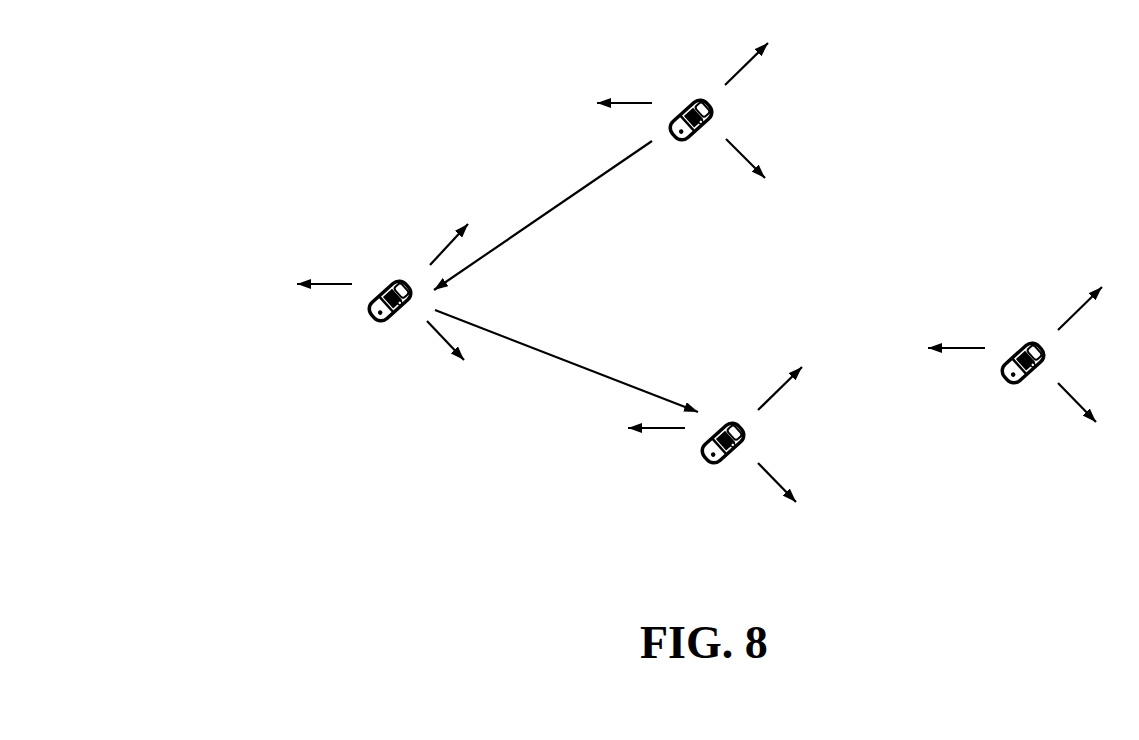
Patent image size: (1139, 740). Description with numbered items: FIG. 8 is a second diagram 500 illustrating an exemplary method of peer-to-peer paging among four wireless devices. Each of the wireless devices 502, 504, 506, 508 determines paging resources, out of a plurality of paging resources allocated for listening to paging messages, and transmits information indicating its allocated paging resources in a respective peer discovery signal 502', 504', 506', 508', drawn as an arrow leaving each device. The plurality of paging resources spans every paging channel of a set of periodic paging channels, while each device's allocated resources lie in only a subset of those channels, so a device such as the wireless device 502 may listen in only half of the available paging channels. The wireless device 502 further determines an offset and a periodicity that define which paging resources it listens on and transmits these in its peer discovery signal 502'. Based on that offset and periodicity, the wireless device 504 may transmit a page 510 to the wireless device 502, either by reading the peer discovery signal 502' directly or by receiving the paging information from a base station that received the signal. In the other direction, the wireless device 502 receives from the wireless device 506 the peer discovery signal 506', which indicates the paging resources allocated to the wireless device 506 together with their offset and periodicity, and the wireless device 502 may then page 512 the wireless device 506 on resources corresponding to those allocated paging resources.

The second diagram 500 is at (236, 60).
The wireless device 502 is at (417, 292).
The peer discovery signal 502' is at (324, 267).
The wireless device 504 is at (717, 110).
The peer discovery signal 504' is at (624, 86).
The wireless device 506 is at (750, 434).
The peer discovery signal 506' is at (657, 444).
The wireless device 508 is at (1050, 354).
The peer discovery signal 508' is at (956, 330).
The page 510 is at (543, 215).
The page 512 is at (566, 361).